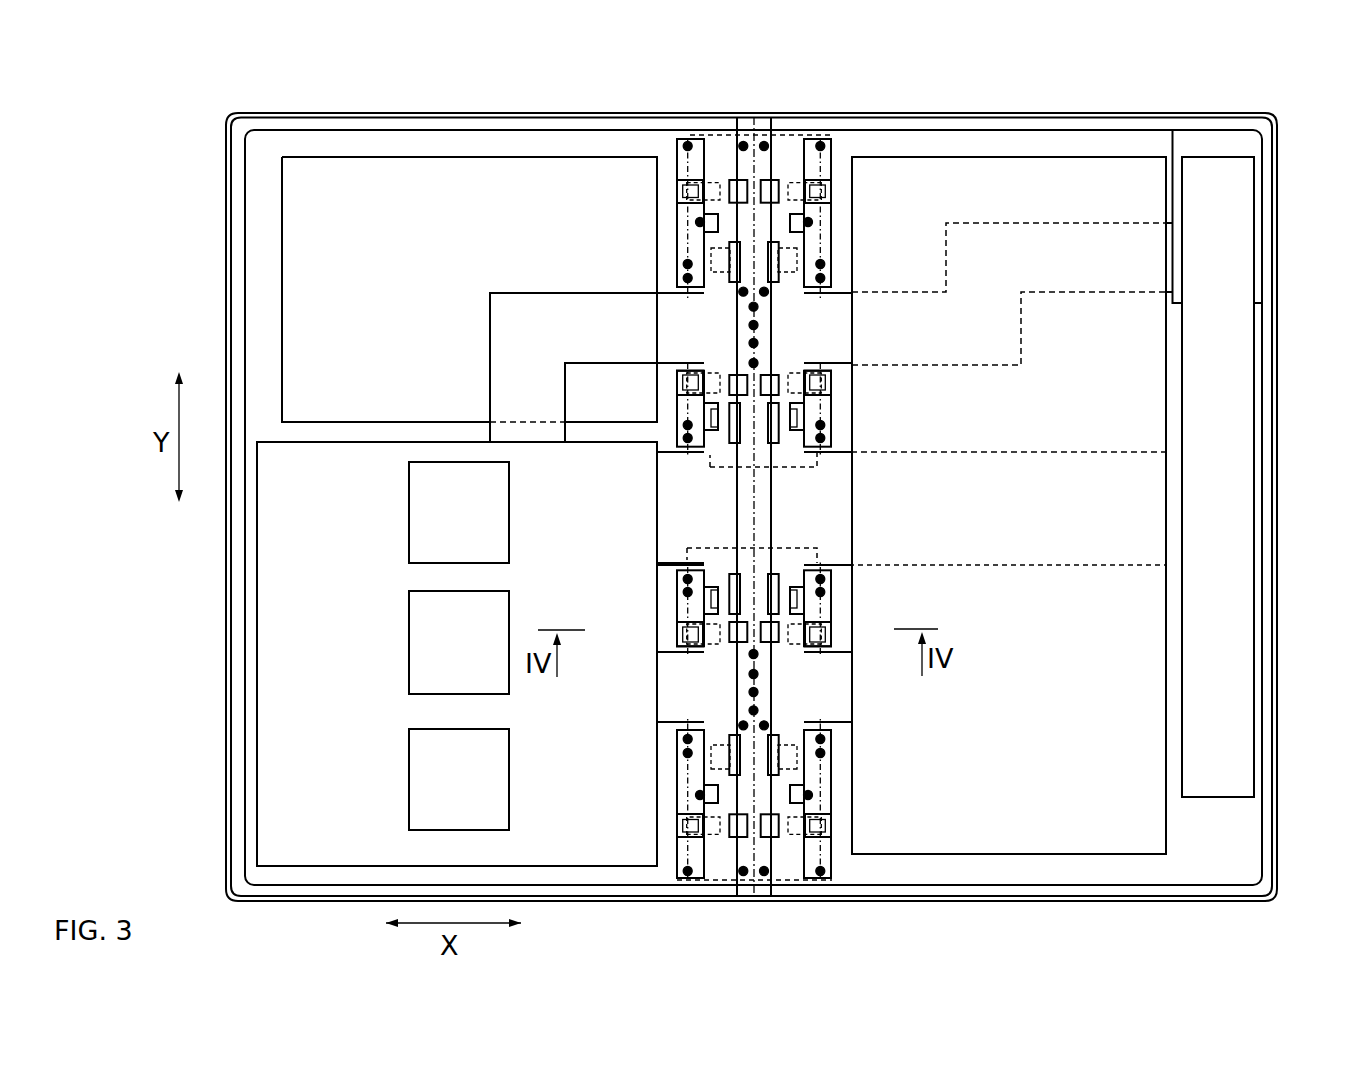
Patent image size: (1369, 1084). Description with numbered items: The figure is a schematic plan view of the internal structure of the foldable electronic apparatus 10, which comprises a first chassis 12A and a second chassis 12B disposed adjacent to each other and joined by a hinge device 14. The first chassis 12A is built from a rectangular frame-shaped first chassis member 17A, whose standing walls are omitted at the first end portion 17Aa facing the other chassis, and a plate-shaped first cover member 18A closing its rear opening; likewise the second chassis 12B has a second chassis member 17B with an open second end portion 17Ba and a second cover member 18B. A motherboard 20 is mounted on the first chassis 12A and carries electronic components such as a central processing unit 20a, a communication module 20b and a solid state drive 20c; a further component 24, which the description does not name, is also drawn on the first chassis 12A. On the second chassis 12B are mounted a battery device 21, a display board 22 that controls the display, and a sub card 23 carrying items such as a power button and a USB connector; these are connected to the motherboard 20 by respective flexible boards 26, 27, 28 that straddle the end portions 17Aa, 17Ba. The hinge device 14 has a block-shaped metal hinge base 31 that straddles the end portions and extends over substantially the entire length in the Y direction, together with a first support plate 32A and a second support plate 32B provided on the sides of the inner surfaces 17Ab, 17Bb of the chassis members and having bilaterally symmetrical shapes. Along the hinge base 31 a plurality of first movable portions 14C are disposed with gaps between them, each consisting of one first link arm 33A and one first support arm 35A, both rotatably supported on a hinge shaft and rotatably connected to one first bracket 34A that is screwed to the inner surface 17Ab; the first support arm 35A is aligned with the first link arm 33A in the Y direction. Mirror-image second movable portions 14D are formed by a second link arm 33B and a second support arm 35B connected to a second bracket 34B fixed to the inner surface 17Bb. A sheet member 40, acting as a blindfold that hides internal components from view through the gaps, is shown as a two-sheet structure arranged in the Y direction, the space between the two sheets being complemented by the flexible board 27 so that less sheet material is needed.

The electronic apparatus 10 is at (231, 88).
The first chassis 12A is at (380, 100).
The second chassis 12B is at (1037, 100).
The hinge device 14 is at (796, 120).
The first movable portion 14C is at (660, 206).
The second movable portion 14D is at (842, 205).
The first chassis member 17A is at (478, 84).
The second chassis member 17B is at (970, 87).
The first end portion 17Aa is at (783, 560).
The inner surface 17Ab is at (614, 140).
The second end portion 17Ba is at (737, 472).
The inner surface 17Bb is at (896, 147).
The first cover member 18A is at (316, 718).
The second cover member 18B is at (1130, 716).
The motherboard 20 is at (326, 853).
The central processing unit 20a is at (412, 514).
The communication module 20b is at (412, 644).
The solid state drive 20c is at (412, 778).
The battery device 21 is at (1047, 838).
The display board 22 is at (1220, 782).
The sub card 23 is at (1213, 148).
The battery 24 is at (316, 247).
The flexible board 26 is at (672, 695).
The flexible board 27 is at (673, 533).
The flexible board 28 is at (506, 351).
The hinge base 31 is at (772, 313).
The first support plate 32A is at (727, 321).
The second support plate 32B is at (785, 348).
The first link arm 33A is at (684, 267).
The second link arm 33B is at (796, 265).
The first bracket 34A is at (676, 225).
The second bracket 34B is at (831, 226).
The first support arm 35A is at (676, 193).
The second support arm 35B is at (831, 192).
The sheet member 40 is at (720, 118).